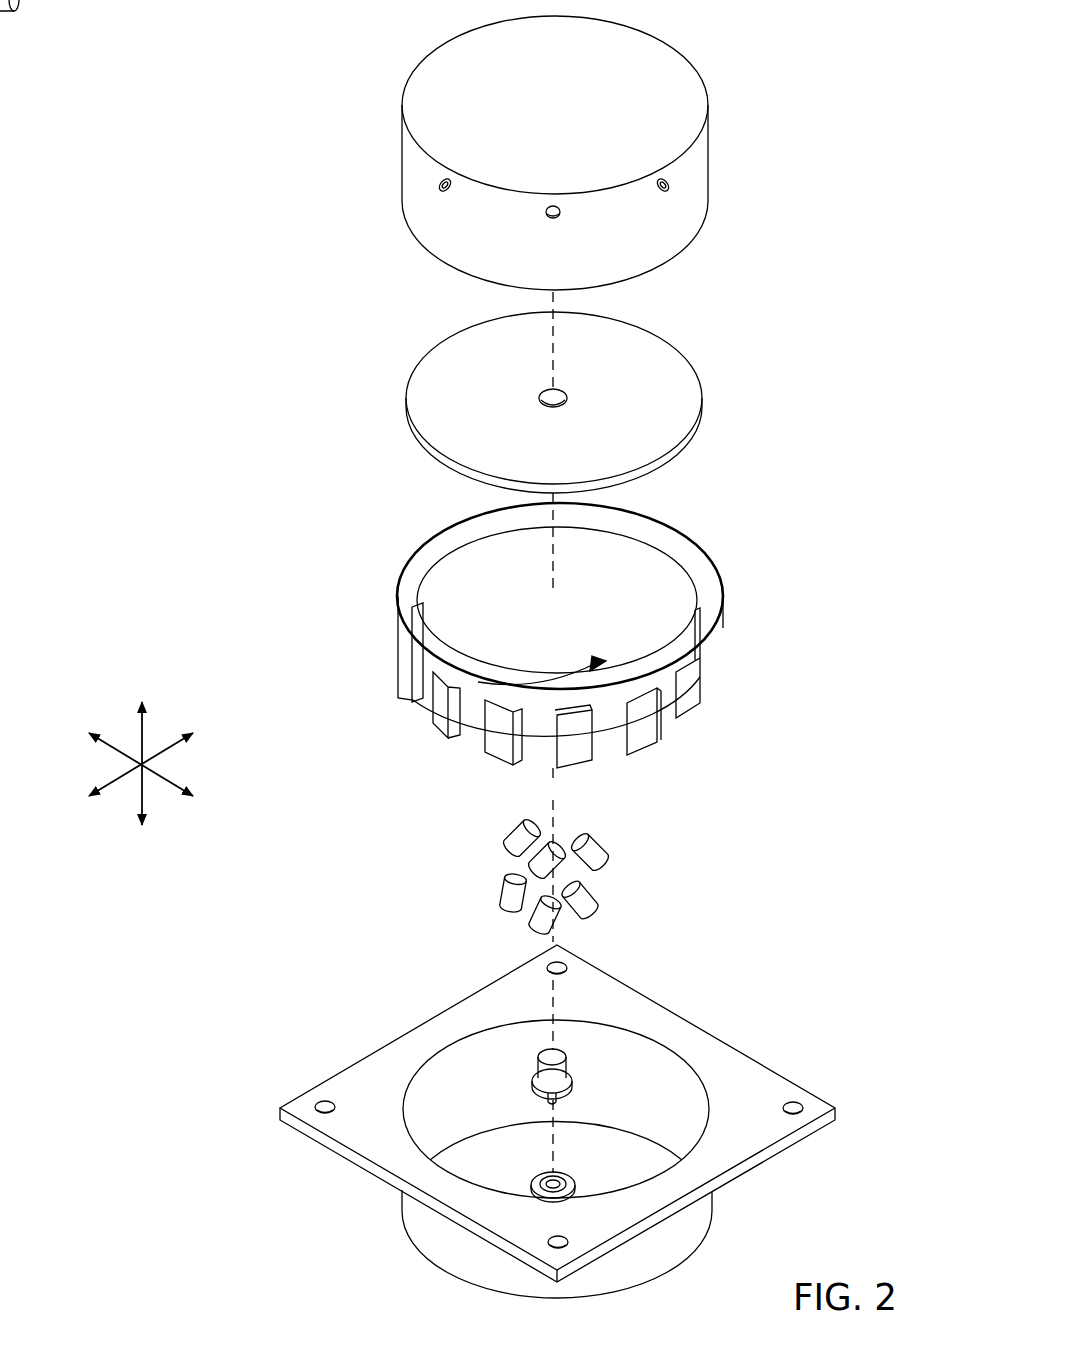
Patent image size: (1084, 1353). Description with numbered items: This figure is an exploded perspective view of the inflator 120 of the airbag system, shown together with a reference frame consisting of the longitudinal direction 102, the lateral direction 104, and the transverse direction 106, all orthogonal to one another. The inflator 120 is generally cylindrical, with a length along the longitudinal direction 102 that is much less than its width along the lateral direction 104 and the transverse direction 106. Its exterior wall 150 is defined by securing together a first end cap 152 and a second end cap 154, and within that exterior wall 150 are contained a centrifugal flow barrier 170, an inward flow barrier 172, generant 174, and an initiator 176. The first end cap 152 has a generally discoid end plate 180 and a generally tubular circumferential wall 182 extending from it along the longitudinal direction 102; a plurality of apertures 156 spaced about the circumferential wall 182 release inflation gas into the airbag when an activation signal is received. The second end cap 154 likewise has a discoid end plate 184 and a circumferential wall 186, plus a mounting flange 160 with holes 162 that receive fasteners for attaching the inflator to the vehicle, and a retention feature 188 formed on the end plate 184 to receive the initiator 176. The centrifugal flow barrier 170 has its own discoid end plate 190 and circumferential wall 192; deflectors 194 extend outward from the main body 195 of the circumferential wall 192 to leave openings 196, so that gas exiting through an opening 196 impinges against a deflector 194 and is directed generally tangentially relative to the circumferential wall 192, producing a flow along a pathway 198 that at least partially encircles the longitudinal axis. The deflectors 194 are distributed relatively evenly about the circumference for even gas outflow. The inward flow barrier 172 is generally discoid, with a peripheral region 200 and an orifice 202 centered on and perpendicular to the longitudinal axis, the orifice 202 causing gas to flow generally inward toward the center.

The longitudinal direction 102 is at (145, 725).
The lateral direction 104 is at (173, 743).
The transverse direction 106 is at (173, 783).
The inflator 120 is at (160, 230).
The exterior wall 150 is at (432, 222).
The first end cap 152 is at (752, 137).
The second end cap 154 is at (801, 1046).
The apertures 156 is at (448, 178).
The mounting flange 160 is at (348, 1055).
The holes 162 is at (565, 966).
The centrifugal flow barrier 170 is at (752, 576).
The inward flow barrier 172 is at (765, 385).
The generant 174 is at (602, 852).
The initiator 176 is at (570, 1063).
The end plate 180 is at (629, 44).
The circumferential wall 182 is at (697, 187).
The end plate 184 is at (627, 1153).
The circumferential wall 186 is at (672, 1072).
The retention feature 188 is at (545, 1180).
The end plate 190 is at (645, 557).
The circumferential wall 192 is at (682, 650).
The deflectors 194 is at (445, 725).
The main body 195 is at (430, 707).
The openings 196 is at (460, 740).
The pathway 198 is at (690, 683).
The peripheral region 200 is at (702, 420).
The orifice 202 is at (567, 398).